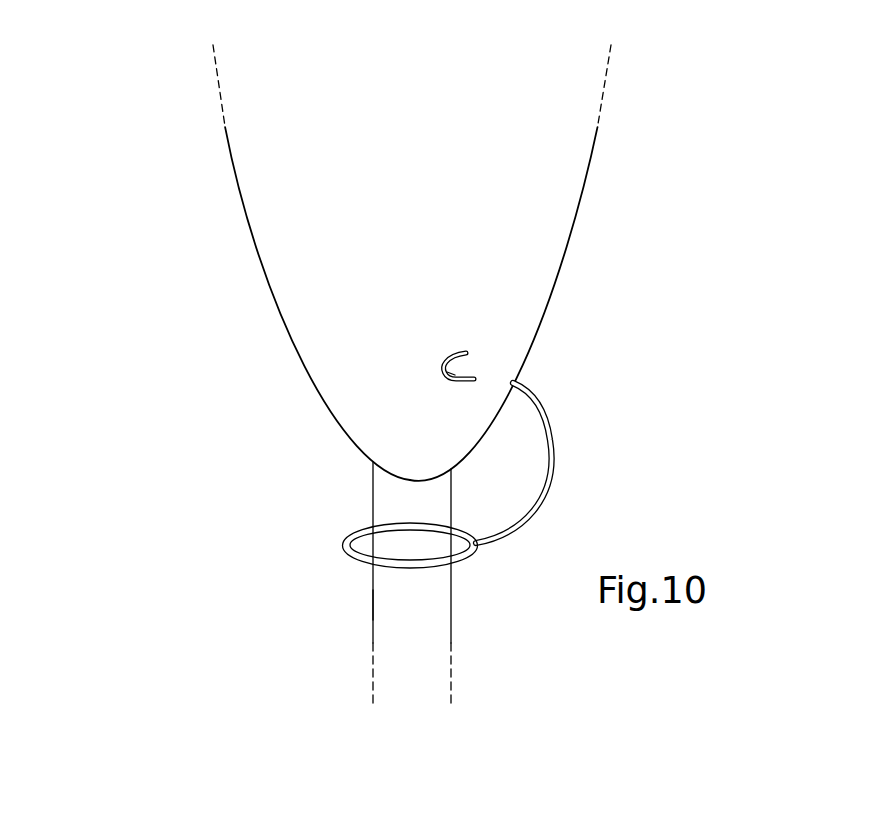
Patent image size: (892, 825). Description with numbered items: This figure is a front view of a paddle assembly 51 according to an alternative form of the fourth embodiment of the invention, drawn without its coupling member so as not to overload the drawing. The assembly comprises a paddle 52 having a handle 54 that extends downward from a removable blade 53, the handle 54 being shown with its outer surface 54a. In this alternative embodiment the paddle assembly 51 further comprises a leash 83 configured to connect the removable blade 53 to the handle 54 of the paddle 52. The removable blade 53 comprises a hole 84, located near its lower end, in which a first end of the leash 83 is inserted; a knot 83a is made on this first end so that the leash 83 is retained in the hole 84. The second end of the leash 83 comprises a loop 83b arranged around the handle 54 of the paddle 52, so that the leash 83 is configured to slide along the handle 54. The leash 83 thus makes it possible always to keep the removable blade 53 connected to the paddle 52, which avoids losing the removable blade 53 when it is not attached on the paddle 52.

The paddle assembly 51 is at (188, 485).
The paddle 52 is at (373, 622).
The removable blade 53 is at (265, 188).
The handle 54 is at (452, 622).
The shaft outer surface 54a is at (382, 605).
The leash 83 is at (549, 455).
The knot 83a is at (440, 372).
The loop 83b is at (340, 545).
The hole 84 is at (473, 373).